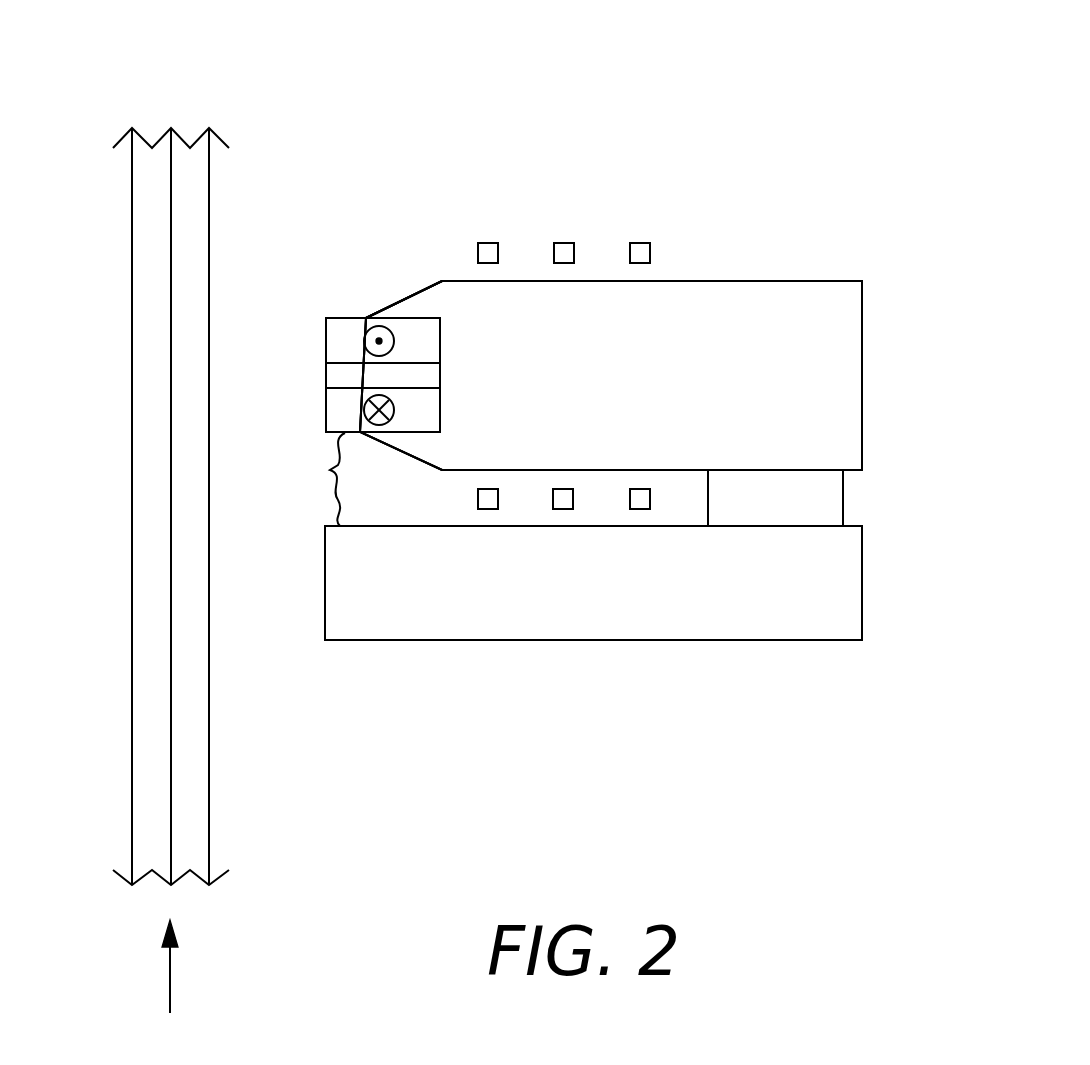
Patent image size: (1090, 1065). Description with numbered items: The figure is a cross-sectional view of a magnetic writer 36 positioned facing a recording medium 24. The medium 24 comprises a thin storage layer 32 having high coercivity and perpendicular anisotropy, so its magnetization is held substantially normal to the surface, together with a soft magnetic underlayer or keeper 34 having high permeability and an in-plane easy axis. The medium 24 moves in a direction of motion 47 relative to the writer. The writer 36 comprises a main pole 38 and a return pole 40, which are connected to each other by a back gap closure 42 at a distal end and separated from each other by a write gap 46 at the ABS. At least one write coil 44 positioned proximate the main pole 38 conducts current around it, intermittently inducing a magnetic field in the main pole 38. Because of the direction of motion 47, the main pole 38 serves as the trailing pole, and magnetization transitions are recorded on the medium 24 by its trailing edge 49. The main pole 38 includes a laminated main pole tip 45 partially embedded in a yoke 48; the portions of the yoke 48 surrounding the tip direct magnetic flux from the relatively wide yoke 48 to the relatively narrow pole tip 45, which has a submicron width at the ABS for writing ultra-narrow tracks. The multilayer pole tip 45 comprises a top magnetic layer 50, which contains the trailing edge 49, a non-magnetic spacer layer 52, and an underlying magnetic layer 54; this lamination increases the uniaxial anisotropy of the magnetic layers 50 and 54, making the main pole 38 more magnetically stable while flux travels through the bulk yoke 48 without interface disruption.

The medium 24 is at (285, 88).
The thin storage layer 32 is at (195, 183).
The soft magnetic underlayer 34 is at (145, 188).
The magnetic writer 36 is at (800, 158).
The main pole 38 is at (850, 385).
The return pole 40 is at (840, 585).
The back gap closure 42 is at (820, 497).
The write coil 44 is at (498, 243).
The main pole tip 45 is at (372, 300).
The write gap 46 is at (317, 479).
The direction of motion 47 is at (172, 985).
The yoke 48 is at (805, 305).
The trailing edge 49 is at (327, 318).
The magnetic layer 50 is at (328, 340).
The non-magnetic spacer layer 52 is at (332, 375).
The magnetic layer 54 is at (330, 405).
The air bearing surface ABS is at (310, 440).